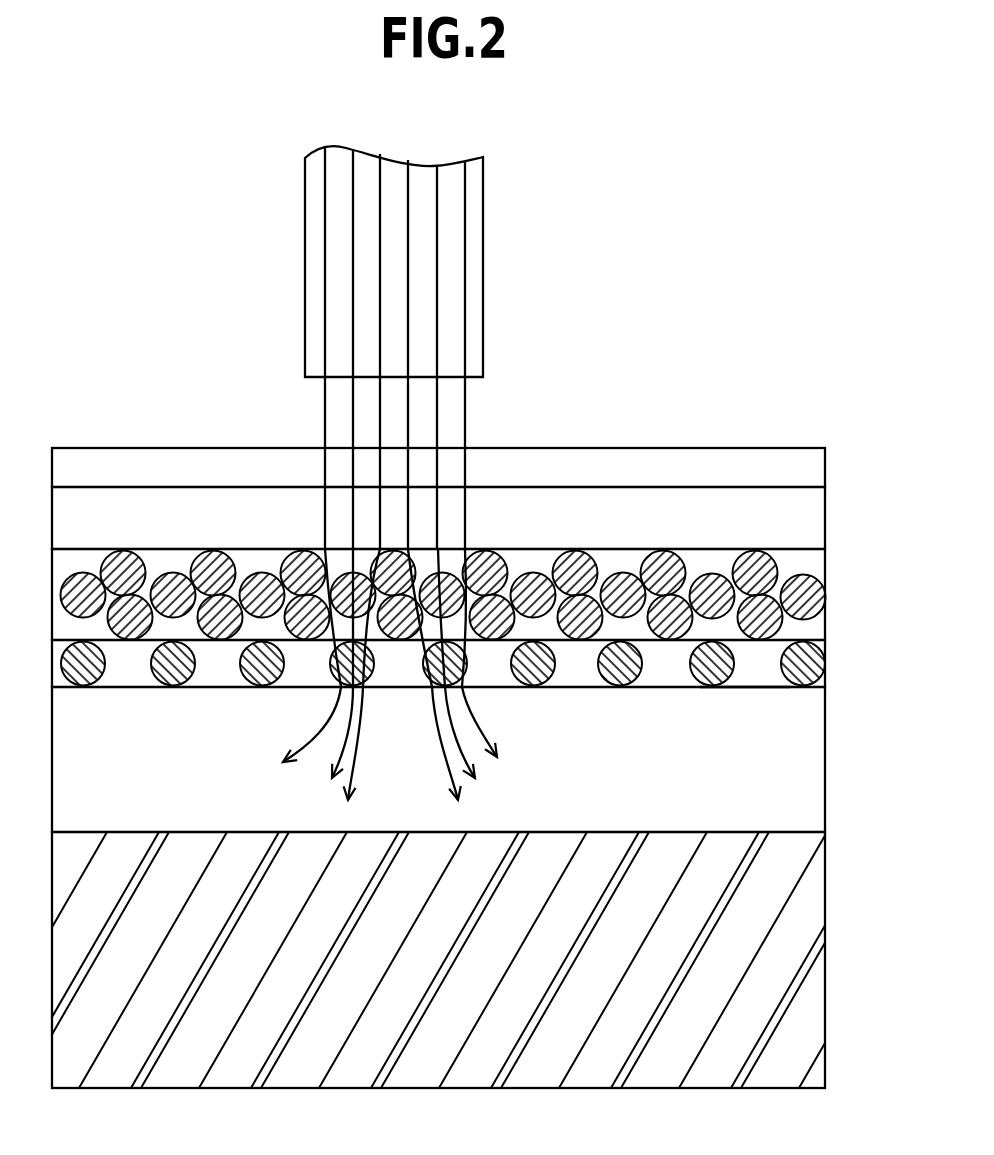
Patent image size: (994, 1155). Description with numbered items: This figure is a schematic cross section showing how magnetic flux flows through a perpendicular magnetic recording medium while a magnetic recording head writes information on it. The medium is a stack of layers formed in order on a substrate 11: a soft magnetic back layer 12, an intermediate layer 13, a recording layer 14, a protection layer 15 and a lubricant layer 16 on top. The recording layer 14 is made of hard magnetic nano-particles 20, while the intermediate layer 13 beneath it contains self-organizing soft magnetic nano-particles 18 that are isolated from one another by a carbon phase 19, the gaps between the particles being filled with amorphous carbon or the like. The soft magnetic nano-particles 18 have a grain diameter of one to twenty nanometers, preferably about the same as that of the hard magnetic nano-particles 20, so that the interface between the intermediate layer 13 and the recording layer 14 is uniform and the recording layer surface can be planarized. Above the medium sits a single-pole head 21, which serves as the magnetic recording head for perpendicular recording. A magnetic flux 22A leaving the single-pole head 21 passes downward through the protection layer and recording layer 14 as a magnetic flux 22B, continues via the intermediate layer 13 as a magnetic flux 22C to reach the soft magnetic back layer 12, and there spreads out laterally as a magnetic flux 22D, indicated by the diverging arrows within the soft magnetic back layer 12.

The substrate 11 is at (825, 960).
The soft magnetic back layer 12 is at (825, 760).
The intermediate layer 13 is at (825, 666).
The recording layer 14 is at (825, 620).
The protection layer 15 is at (825, 520).
The lubricant layer 16 is at (825, 470).
The soft magnetic nano-particles 18 is at (696, 688).
The carbon phase 19 is at (746, 686).
The hard magnetic nano-particles 20 is at (812, 573).
The single-pole head 21 is at (483, 265).
The magnetic flux 22A is at (465, 412).
The magnetic flux 22B is at (467, 553).
The magnetic flux 22C is at (470, 698).
The magnetic flux 22D is at (437, 735).